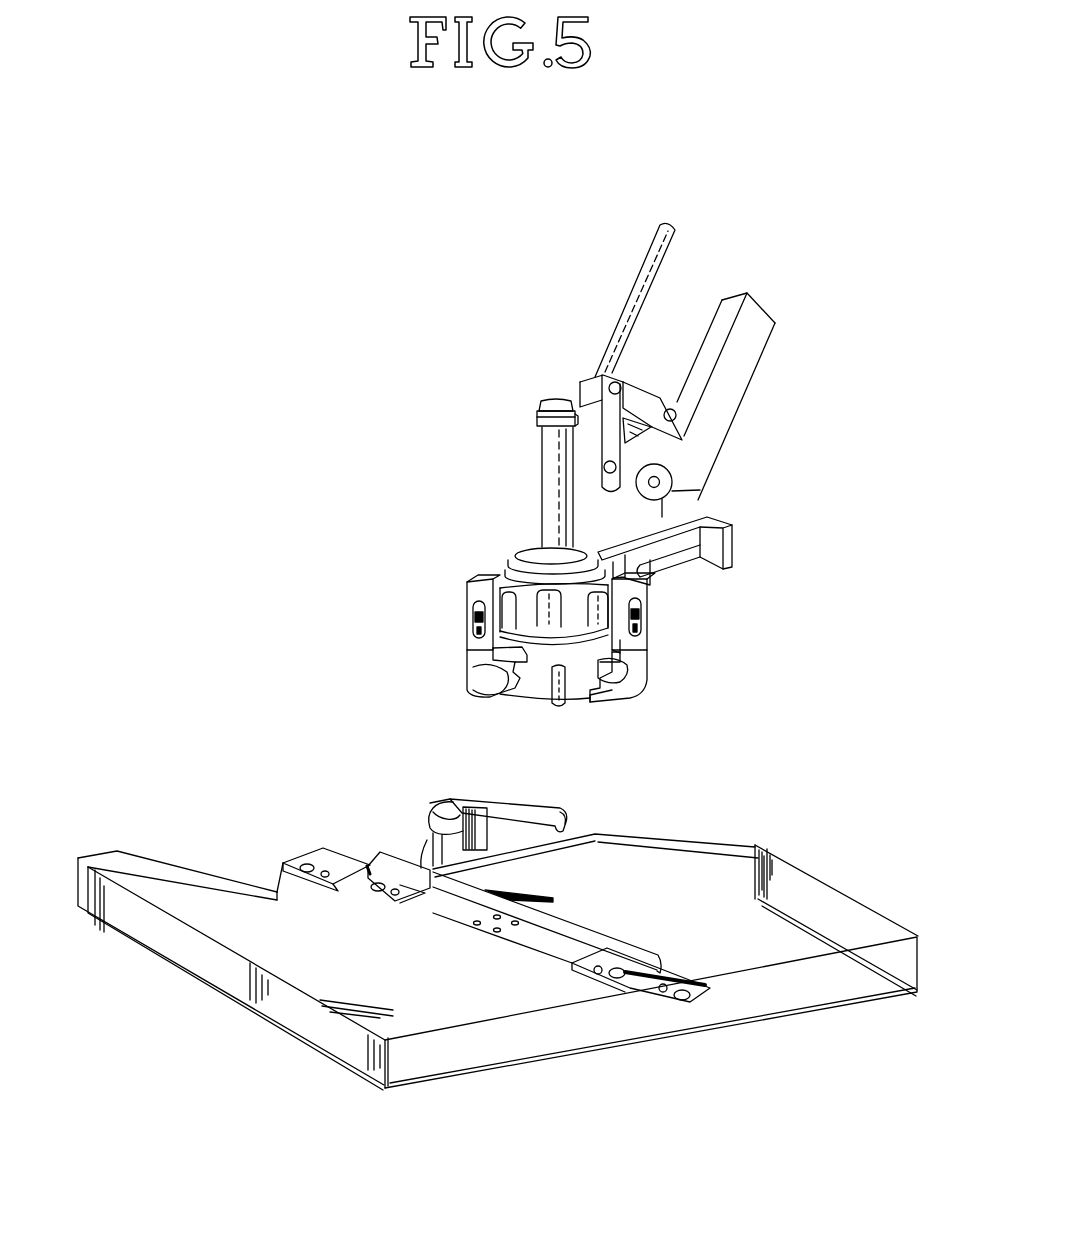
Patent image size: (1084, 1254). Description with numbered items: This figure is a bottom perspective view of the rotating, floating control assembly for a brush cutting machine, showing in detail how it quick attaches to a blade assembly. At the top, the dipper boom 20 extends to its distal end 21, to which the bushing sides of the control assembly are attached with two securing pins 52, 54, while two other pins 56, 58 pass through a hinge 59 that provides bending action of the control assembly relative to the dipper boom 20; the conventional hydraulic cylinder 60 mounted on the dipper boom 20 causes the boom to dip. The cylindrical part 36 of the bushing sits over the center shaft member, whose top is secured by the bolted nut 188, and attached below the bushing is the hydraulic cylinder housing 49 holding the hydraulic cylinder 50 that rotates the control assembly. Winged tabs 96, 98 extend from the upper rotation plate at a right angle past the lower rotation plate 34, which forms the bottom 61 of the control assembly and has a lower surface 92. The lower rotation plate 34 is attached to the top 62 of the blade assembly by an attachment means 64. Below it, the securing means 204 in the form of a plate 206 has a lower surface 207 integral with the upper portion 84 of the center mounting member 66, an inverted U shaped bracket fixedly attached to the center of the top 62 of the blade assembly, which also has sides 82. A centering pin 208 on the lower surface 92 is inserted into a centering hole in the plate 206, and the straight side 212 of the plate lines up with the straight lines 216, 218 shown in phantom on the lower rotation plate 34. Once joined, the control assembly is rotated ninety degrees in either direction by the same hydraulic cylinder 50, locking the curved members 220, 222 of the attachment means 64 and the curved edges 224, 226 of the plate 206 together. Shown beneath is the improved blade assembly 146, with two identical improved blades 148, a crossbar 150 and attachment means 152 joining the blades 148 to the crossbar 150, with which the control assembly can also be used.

The dipper boom 20 is at (745, 366).
The distal end of the dipper boom 21 is at (690, 473).
The lower rotation plate 34 is at (540, 630).
The cylindrical part of the bushing 36 is at (542, 494).
The hydraulic cylinder housing 49 is at (721, 548).
The hydraulic cylinder 50 is at (686, 567).
The securing pin 52 is at (672, 485).
The securing pin 54 is at (603, 467).
The pin 56 is at (690, 419).
The pin 58 is at (598, 379).
The hinge 59 is at (672, 495).
The hydraulic cylinder 60 is at (622, 312).
The bottom of the control assembly 61 is at (766, 703).
The top of the blade assembly 62 is at (511, 962).
The attachment means 64 is at (585, 822).
The center mounting member 66 is at (543, 827).
The sides of the blade assembly 82 is at (860, 925).
The upper portion of the center mounting member 84 is at (432, 862).
The lower surface of the lower rotation plate 92 is at (620, 642).
The winged tab 96 is at (640, 600).
The winged tab 98 is at (465, 595).
The improved blade assembly 146 is at (712, 1002).
The improved blades 148 is at (287, 870).
The crossbar 150 is at (520, 933).
The attachment means 152 is at (375, 893).
The bolted nut 188 is at (537, 421).
The securing means 204 is at (472, 795).
The securing means plate 206 is at (443, 803).
The lower surface of the plate 207 is at (428, 820).
The centering pin 208 is at (570, 702).
The straight side of the securing means plate 212 is at (545, 803).
The straight line 216 is at (628, 681).
The straight line 218 is at (478, 690).
The curved member of the attachment means 220 is at (631, 697).
The curved member of the attachment means 222 is at (497, 668).
The curved edge of the securing means plate 224 is at (568, 815).
The curved edge of the securing means plate 226 is at (430, 803).